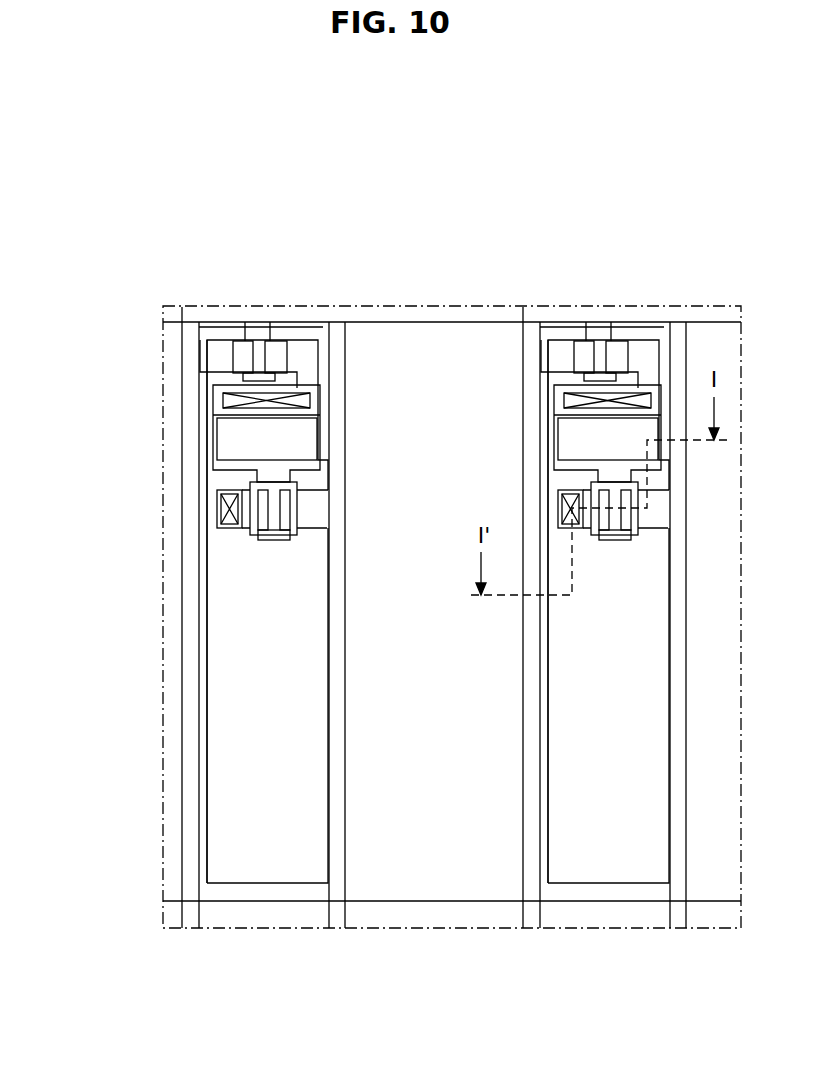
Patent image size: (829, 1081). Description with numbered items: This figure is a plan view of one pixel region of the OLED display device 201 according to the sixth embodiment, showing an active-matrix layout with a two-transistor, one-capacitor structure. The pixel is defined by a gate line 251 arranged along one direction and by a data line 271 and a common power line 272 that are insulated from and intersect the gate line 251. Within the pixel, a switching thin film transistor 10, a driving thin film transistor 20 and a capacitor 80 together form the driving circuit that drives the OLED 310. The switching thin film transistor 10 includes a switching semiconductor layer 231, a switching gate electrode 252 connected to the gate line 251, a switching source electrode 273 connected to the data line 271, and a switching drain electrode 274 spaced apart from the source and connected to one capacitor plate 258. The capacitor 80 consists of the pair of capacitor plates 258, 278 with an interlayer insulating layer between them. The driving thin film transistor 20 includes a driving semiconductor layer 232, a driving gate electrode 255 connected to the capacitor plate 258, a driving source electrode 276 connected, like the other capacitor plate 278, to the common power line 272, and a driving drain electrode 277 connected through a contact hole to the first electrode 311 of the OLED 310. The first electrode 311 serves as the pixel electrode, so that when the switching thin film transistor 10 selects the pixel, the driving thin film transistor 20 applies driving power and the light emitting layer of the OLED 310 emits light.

The OLED display device 201 is at (143, 110).
The switching thin film transistor 10 is at (163, 220).
The driving thin film transistor 20 is at (75, 555).
The capacitor 80 is at (75, 428).
The gate line 251 is at (172, 314).
The data line 271 is at (190, 396).
The common power line 272 is at (340, 345).
The switching source electrode 273 is at (222, 343).
The switching drain electrode 274 is at (298, 343).
The switching gate electrode 252 is at (258, 343).
The switching semiconductor layer 231 is at (268, 340).
The driving semiconductor layer 232 is at (258, 538).
The driving gate electrode 255 is at (278, 540).
The driving drain electrode 277 is at (228, 530).
The driving source electrode 276 is at (312, 532).
The capacitor plate 278 is at (237, 458).
The capacitor plate 258 is at (213, 464).
The OLED 310 is at (228, 777).
The first electrode 311 is at (207, 723).